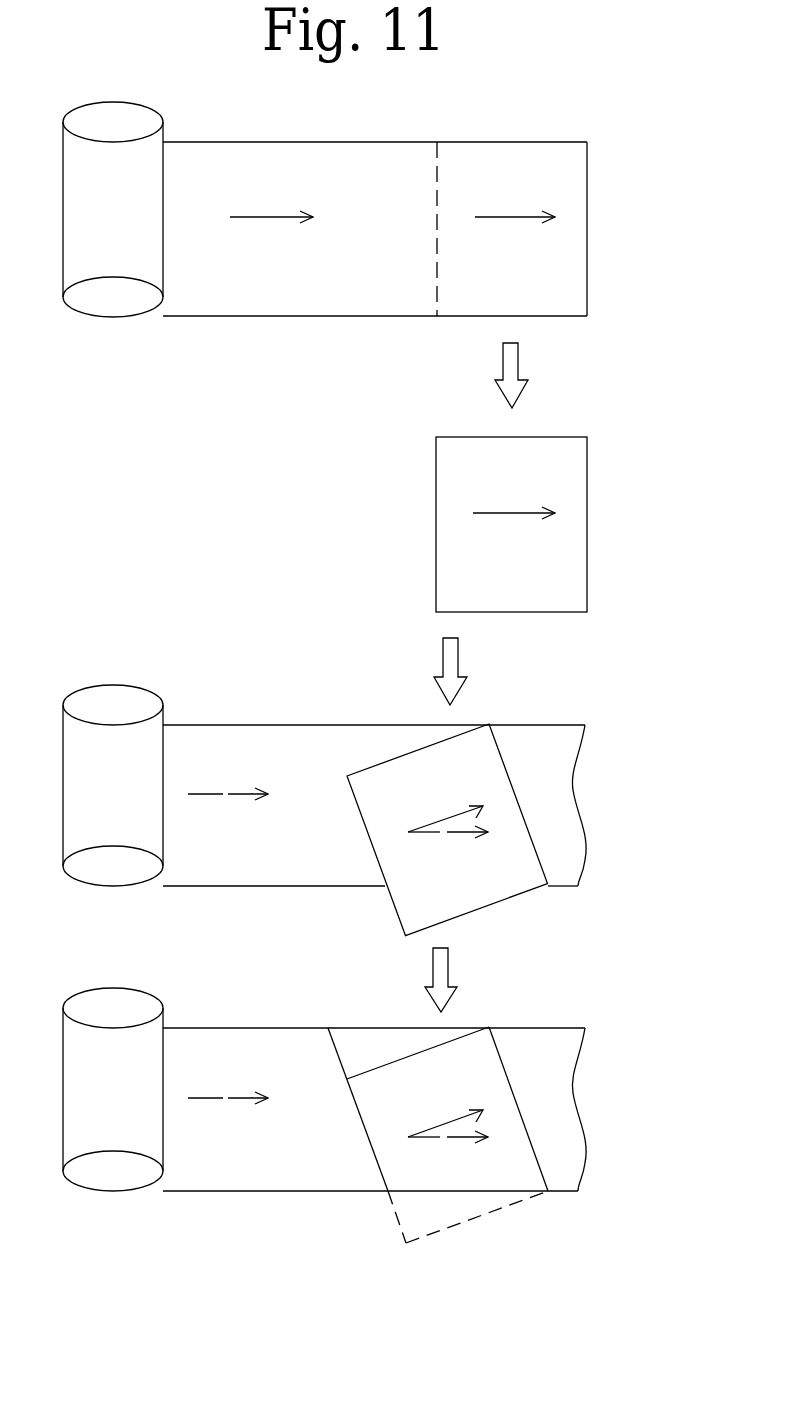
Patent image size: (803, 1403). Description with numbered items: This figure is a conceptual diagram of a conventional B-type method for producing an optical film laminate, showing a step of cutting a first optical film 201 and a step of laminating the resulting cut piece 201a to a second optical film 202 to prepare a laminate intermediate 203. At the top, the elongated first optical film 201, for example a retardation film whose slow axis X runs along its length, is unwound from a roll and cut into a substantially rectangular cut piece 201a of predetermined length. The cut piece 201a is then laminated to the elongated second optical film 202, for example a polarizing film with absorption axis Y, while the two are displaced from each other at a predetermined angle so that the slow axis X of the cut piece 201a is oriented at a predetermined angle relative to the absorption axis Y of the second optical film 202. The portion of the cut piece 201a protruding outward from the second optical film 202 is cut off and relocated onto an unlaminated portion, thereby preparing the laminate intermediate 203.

The first optical film 201 is at (205, 275).
The cut piece 201a is at (558, 265).
The second optical film 202 is at (213, 852).
The laminate intermediate 203 is at (547, 822).